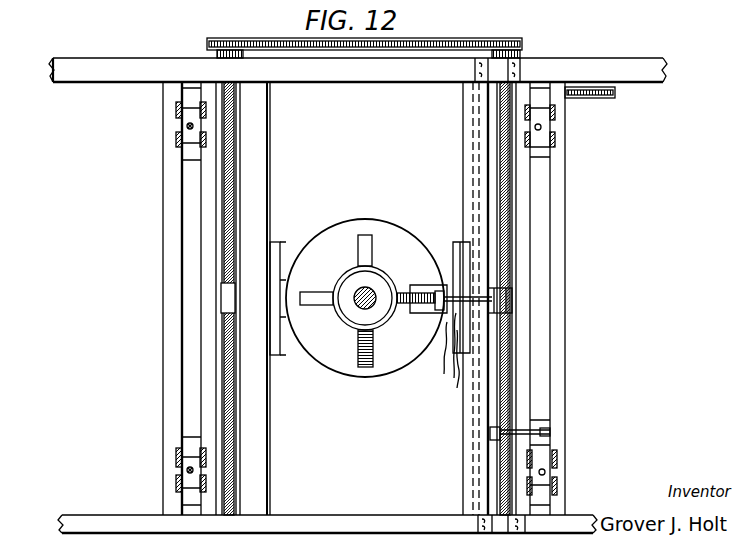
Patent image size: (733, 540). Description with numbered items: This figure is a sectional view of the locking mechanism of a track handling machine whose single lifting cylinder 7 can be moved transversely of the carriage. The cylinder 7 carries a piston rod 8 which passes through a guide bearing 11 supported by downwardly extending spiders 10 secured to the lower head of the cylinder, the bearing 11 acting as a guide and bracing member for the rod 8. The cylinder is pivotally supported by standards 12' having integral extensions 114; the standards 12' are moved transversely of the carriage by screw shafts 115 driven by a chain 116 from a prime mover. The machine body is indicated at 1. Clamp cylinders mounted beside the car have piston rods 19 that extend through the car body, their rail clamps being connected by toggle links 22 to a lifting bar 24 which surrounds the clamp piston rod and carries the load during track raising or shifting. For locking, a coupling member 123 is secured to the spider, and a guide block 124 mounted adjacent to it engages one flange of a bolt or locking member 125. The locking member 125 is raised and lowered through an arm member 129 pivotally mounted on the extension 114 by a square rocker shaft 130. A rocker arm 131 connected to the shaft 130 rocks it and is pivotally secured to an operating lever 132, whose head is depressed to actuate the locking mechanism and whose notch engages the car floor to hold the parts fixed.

The table board 1 is at (358, 61).
The lifting cylinder 7 is at (365, 287).
The piston rod 8 is at (365, 307).
The spiders 10 is at (378, 301).
The guide bearing 11 is at (320, 312).
The standards 12' is at (370, 297).
The piston rod 19 is at (365, 301).
The toggle link 22 is at (365, 296).
The lifting bar 24 is at (362, 297).
The integral extensions 114 is at (542, 300).
The screw shafts 115 is at (412, 298).
The chain 116 is at (364, 36).
The coupling member 123 is at (448, 317).
The guide block 124 is at (443, 364).
The locking member 125 is at (433, 351).
The arm member 129 is at (428, 287).
The rocker shaft 130 is at (553, 298).
The rocker arm 131 is at (551, 419).
The operating lever 132 is at (546, 436).